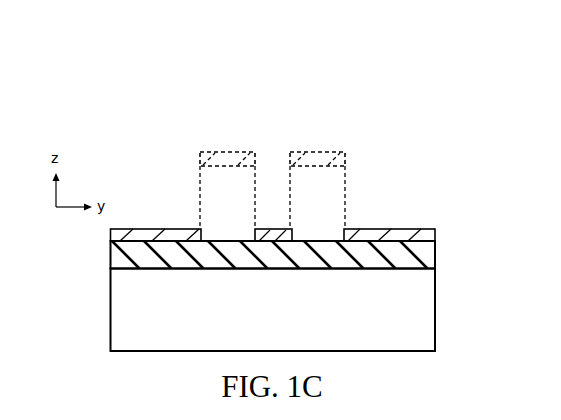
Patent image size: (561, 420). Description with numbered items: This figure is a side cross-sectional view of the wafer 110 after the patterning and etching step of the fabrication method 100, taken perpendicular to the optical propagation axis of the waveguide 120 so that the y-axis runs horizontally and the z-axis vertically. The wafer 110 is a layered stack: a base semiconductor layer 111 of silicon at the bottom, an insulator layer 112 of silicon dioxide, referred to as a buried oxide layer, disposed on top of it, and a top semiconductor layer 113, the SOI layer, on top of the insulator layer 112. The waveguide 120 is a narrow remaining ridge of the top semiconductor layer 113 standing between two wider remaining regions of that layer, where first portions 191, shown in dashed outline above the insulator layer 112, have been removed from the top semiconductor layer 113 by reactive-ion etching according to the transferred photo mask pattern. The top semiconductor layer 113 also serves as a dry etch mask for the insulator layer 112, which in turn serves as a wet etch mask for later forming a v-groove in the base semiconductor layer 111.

The method 100 is at (385, 76).
The wafer 110 is at (105, 228).
The base semiconductor layer 111 is at (291, 318).
The insulator layer 112 is at (428, 258).
The top semiconductor layer 113 is at (152, 233).
The waveguide 120 is at (271, 229).
The first portions 191 is at (228, 152).